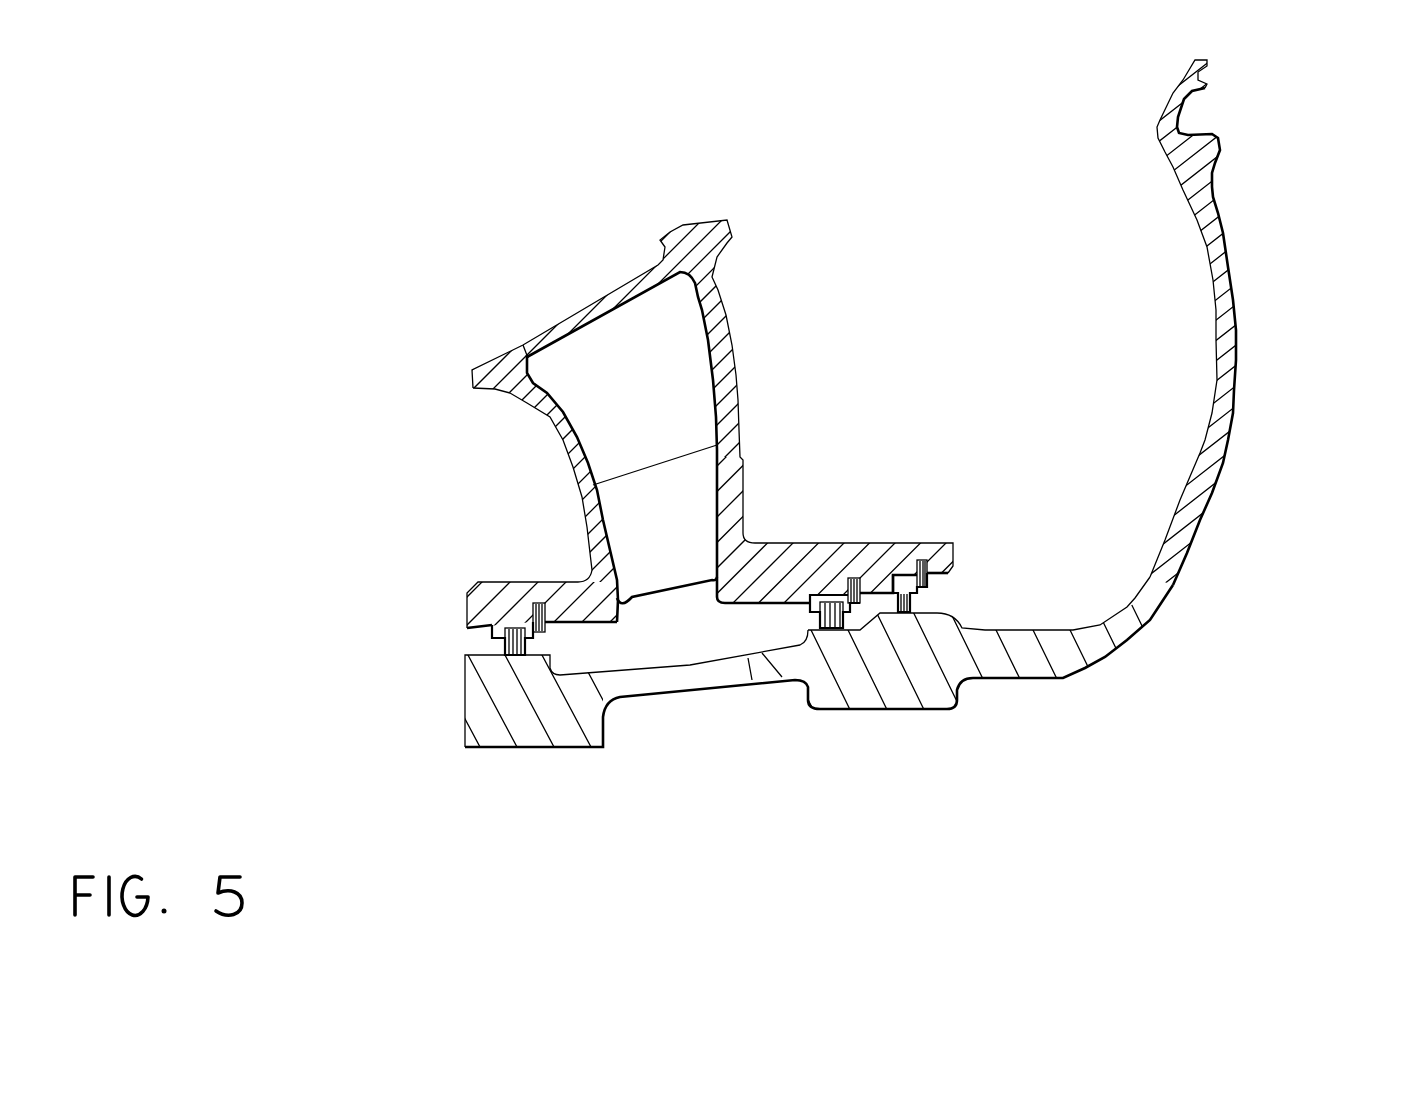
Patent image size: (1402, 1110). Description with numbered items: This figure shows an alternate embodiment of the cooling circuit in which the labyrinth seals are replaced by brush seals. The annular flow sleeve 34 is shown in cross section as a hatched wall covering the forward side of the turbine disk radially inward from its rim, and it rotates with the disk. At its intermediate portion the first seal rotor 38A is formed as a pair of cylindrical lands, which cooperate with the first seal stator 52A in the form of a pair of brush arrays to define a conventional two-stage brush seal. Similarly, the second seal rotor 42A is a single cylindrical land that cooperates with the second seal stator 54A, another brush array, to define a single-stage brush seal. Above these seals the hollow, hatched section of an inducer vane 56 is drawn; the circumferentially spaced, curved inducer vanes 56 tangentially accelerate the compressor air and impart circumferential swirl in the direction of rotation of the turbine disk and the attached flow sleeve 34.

The annular flow sleeve 34 is at (1252, 403).
The first seal rotor 38A is at (940, 607).
The second seal rotor 42A is at (483, 652).
The first seal stator 52A is at (812, 614).
The second seal stator 54A is at (530, 648).
The inducer vanes 56 is at (675, 512).